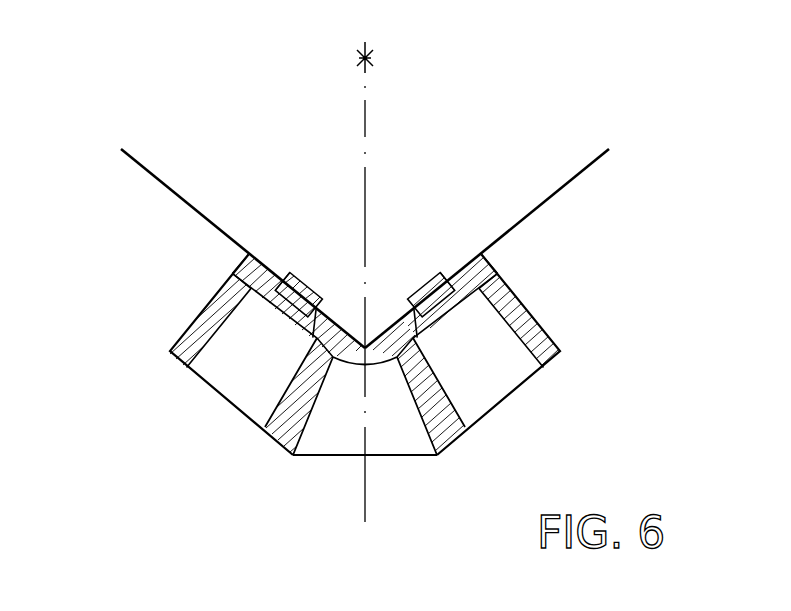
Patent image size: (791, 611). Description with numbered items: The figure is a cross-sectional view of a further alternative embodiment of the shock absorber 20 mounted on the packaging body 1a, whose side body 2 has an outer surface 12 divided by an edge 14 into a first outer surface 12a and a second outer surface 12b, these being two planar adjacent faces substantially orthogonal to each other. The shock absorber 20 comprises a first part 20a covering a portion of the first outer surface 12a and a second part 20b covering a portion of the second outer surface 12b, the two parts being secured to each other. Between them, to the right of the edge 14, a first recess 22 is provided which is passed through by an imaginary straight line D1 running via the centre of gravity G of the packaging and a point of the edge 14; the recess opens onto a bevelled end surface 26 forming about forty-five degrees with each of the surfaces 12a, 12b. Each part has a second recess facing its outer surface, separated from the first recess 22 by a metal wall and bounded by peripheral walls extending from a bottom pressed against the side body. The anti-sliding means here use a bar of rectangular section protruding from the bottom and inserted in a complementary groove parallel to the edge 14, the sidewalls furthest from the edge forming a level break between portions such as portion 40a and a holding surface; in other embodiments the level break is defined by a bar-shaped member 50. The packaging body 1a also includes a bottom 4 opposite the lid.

The centre of gravity G is at (368, 60).
The side body 2 is at (492, 70).
The packaging body 1a is at (576, 37).
The outer surface 12 is at (133, 318).
The first outer surface 12a is at (190, 205).
The second outer surface 12b is at (543, 205).
The first part 20a is at (211, 308).
The shock absorber 20 is at (545, 352).
The second part 20b is at (593, 317).
The portion of the outer surface 40a is at (215, 258).
The member 50 is at (215, 240).
The bottom 4 is at (362, 473).
The edge 14 is at (365, 363).
The first recess 22 is at (388, 446).
The end surface 26 is at (412, 458).
The imaginary straight line D1 is at (363, 508).